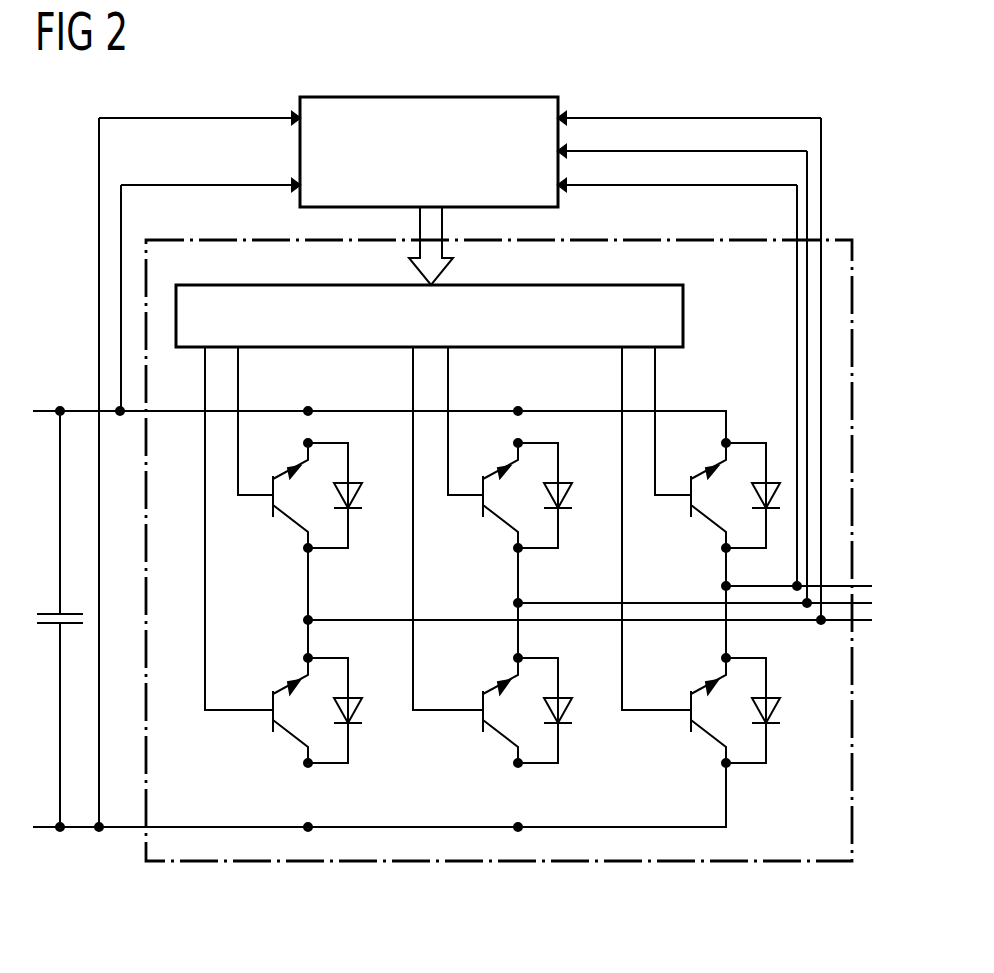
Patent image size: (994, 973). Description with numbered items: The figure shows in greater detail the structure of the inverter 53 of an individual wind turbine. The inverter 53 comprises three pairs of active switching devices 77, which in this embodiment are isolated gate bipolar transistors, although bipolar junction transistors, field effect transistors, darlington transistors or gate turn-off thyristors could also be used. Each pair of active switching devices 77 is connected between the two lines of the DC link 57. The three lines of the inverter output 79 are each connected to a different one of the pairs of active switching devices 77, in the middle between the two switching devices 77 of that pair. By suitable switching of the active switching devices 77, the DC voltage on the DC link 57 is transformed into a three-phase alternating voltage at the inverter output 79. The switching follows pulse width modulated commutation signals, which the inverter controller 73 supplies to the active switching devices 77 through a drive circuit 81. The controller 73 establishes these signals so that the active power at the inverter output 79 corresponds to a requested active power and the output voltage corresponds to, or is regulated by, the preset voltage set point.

The inverter 53 is at (495, 862).
The DC link 57 is at (118, 830).
The inverter controller 73 is at (430, 96).
The active switching devices 77 is at (282, 534).
The inverter output 79 is at (868, 570).
The drive circuit 81 is at (683, 315).